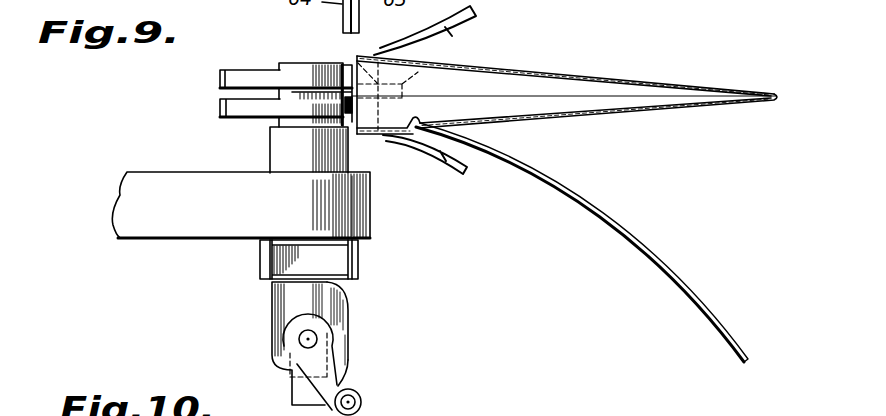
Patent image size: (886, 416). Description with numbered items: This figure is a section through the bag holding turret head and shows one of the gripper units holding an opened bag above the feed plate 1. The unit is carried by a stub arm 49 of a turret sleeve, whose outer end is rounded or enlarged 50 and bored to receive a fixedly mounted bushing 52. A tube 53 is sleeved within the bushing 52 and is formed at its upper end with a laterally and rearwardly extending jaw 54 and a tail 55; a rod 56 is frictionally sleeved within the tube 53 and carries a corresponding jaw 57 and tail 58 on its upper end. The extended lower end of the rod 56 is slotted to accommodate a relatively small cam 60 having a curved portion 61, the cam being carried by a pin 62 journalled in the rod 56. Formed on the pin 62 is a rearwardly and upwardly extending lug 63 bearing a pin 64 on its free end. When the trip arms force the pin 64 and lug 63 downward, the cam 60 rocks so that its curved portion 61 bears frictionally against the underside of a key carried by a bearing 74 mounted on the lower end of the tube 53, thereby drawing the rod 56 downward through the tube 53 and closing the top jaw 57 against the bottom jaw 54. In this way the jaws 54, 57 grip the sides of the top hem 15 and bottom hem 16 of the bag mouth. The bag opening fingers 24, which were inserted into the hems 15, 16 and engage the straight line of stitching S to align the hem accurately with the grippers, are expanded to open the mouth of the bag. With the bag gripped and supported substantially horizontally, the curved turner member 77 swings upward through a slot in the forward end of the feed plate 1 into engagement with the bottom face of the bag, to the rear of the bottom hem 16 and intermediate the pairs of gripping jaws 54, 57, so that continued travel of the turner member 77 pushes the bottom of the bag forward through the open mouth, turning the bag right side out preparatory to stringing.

The feed plate 1 is at (562, 74).
The top hem 15 is at (392, 49).
The bottom hem 16 is at (385, 138).
The bag opening finger 24 is at (476, 22).
The stub arm 49 is at (133, 198).
The rounded enlarged end 50 is at (369, 220).
The bushing 52 is at (288, 153).
The tube 53 is at (292, 112).
The jaw 54 is at (402, 103).
The tail 55 is at (227, 108).
The rod 56 is at (294, 302).
The jaw 57 is at (433, 61).
The tail 58 is at (237, 80).
The cam 60 is at (340, 315).
The curved portion 61 is at (346, 296).
The pin 62 is at (318, 343).
The lug 63 is at (303, 370).
The pin 64 is at (359, 398).
The bearing 74 is at (345, 263).
The turner member 77 is at (622, 227).
The line of stitching S is at (355, 74).